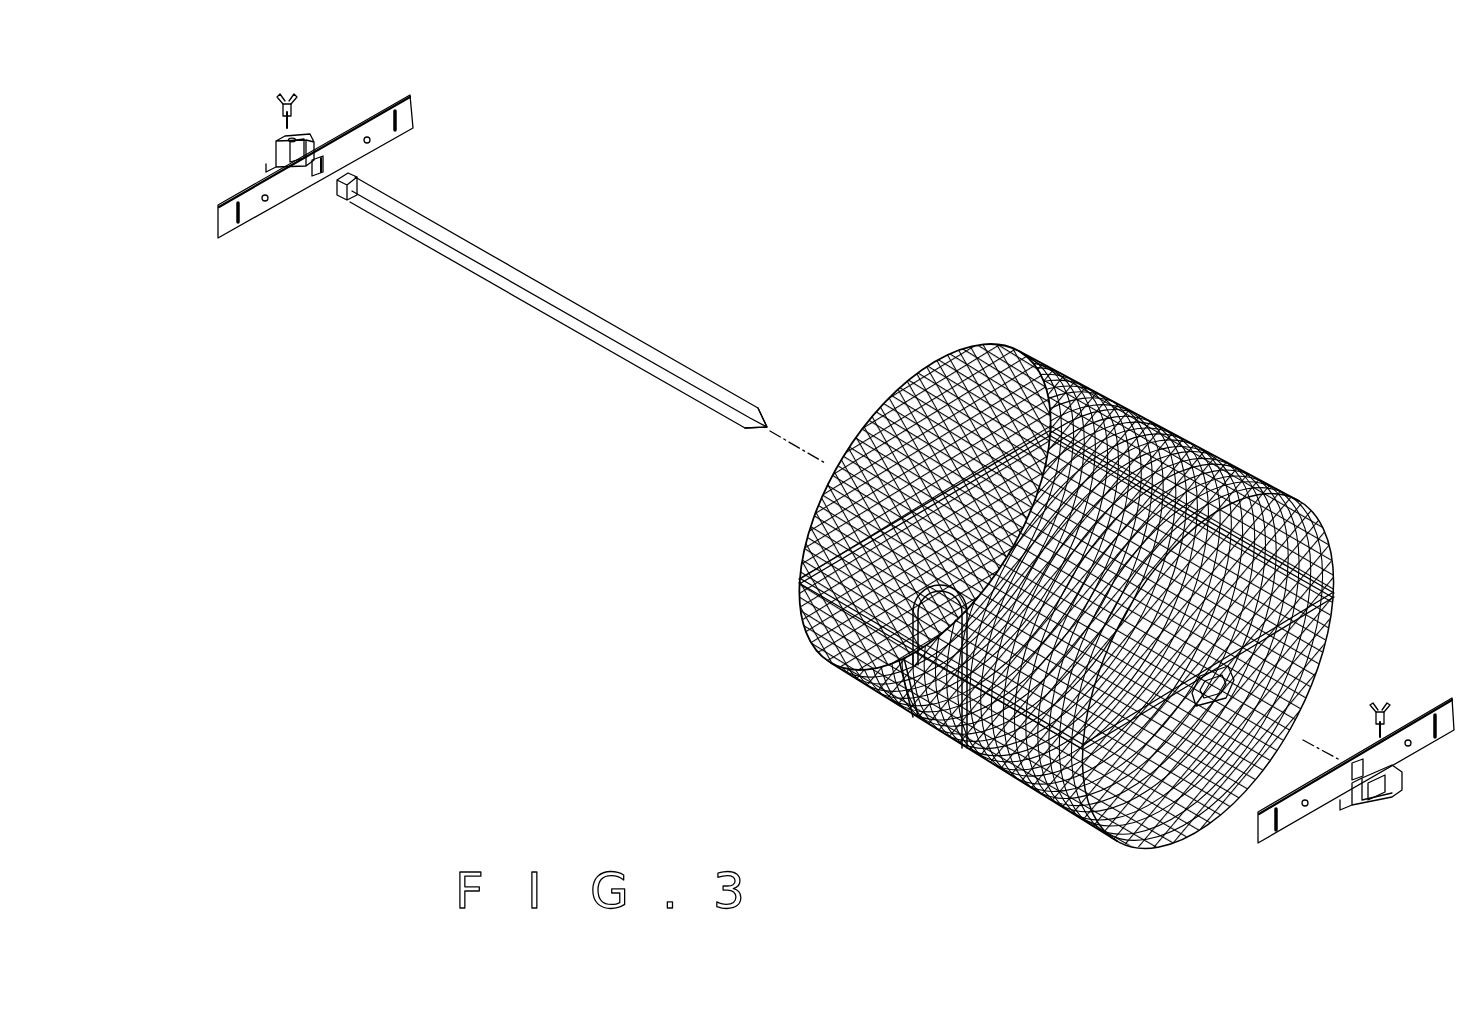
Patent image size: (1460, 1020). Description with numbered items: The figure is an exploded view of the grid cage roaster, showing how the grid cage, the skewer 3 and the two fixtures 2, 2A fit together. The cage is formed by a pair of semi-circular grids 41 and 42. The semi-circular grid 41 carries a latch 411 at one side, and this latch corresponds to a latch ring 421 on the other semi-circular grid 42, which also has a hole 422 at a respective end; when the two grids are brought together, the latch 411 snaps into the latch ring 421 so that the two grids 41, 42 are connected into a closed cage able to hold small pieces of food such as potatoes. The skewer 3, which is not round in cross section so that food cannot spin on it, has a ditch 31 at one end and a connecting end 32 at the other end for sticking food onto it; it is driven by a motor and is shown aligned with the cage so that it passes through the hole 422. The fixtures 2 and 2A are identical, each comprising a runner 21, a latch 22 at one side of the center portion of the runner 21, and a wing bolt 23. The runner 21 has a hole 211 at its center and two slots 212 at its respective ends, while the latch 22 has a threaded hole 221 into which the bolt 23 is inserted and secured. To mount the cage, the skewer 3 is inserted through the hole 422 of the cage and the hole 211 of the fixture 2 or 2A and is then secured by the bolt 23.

The fixture 2 is at (340, 237).
The fixture 2A is at (1450, 698).
The runner 21 is at (370, 218).
The hole 211 is at (318, 175).
The slots 212 is at (397, 120).
The latch 22 is at (248, 104).
The threaded hole 221 is at (292, 140).
The wing bolt 23 is at (287, 112).
The skewer 3 is at (581, 318).
The ditch 31 is at (358, 178).
The connecting end 32 is at (765, 417).
The semi-circular grid 41 is at (1183, 460).
The latch 411 is at (955, 747).
The semi-circular grid 42 is at (1095, 686).
The latch ring 421 is at (887, 707).
The hole 422 is at (1330, 553).